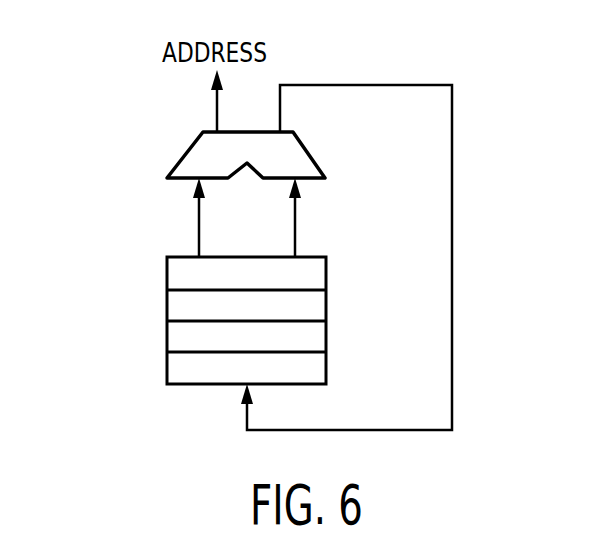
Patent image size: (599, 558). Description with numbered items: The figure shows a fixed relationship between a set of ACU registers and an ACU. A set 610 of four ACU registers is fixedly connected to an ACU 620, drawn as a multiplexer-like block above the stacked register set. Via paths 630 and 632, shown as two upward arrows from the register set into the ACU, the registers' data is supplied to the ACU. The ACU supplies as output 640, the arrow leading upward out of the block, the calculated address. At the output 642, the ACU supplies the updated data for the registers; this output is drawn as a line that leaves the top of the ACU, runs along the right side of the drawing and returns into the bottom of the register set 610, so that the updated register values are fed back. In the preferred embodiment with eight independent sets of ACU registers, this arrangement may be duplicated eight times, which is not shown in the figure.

The set of ACU registers 610 is at (167, 330).
The ACU 620 is at (180, 160).
The path 630 is at (199, 227).
The path 632 is at (295, 228).
The output 640 is at (217, 110).
The output 642 is at (373, 84).